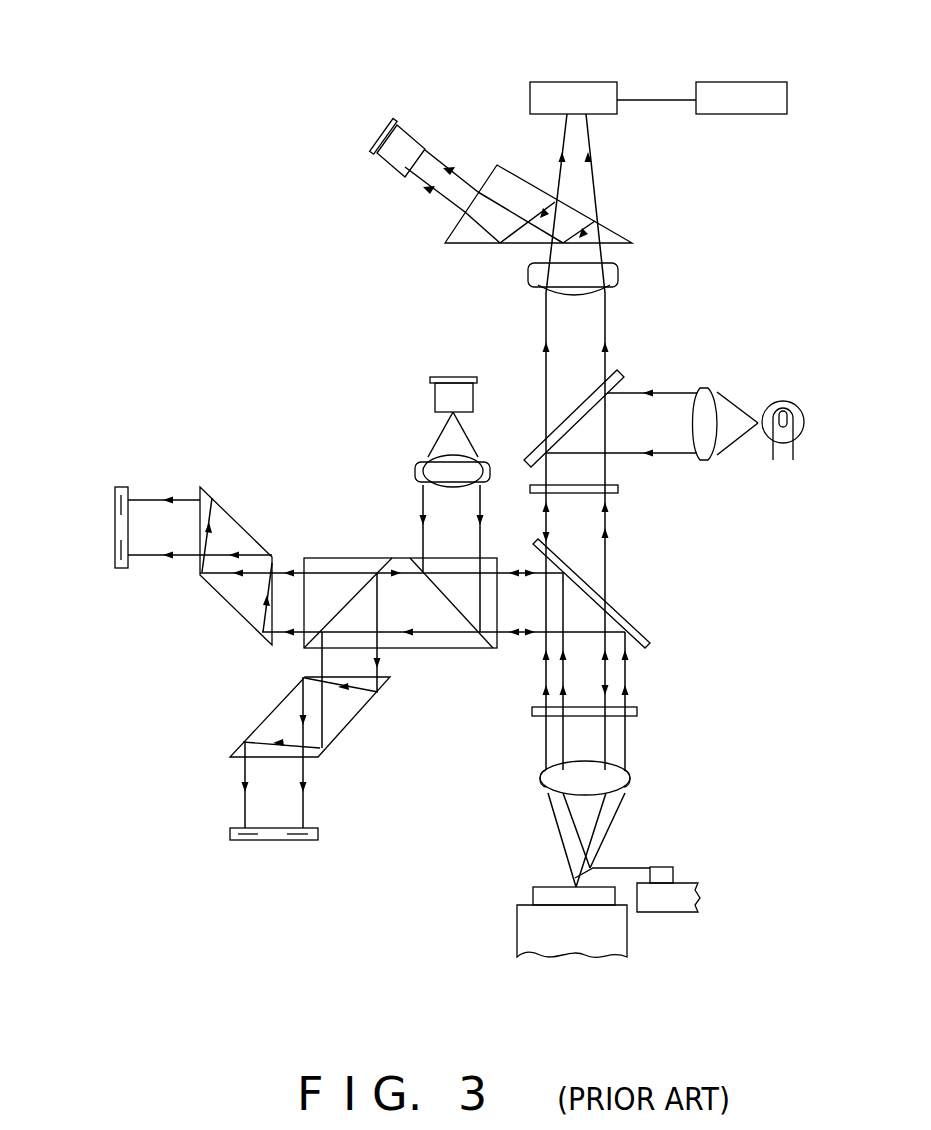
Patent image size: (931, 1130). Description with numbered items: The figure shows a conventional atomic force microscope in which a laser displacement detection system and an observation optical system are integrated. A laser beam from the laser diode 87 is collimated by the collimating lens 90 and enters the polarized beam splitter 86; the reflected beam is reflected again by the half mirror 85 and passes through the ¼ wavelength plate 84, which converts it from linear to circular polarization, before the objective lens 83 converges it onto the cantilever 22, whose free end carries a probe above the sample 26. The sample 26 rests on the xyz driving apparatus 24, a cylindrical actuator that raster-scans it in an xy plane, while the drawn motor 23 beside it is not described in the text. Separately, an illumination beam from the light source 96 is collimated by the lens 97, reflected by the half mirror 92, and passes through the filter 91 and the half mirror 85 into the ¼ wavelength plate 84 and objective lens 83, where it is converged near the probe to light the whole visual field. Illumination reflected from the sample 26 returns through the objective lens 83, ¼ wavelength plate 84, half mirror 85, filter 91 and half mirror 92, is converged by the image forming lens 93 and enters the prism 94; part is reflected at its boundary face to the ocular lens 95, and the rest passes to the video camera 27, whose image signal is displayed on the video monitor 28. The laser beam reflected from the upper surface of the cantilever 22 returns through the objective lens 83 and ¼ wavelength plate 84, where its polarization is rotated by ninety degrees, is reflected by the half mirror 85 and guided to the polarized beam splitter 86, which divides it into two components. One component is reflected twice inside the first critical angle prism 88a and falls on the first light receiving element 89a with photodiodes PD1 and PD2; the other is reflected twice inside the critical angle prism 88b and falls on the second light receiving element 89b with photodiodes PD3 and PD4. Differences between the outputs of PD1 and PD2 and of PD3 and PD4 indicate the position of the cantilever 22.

The cantilever 22 is at (617, 868).
The spindle motor 23 is at (673, 875).
The xyz driving apparatus 24 is at (517, 930).
The sample 26 is at (533, 893).
The video camera 27 is at (562, 82).
The video monitor 28 is at (737, 82).
The objective lens 83 is at (632, 778).
The ¼ wavelength plate 84 is at (637, 711).
The half mirror 85 is at (648, 640).
The polarized beam splitter 86 is at (462, 648).
The laser diode 87 is at (448, 377).
The first critical angle prism 88a is at (243, 523).
The critical angle prism 88b is at (350, 723).
The first light receiving element 89a is at (118, 487).
The second light receiving element 89b is at (318, 834).
The collimating lens 90 is at (415, 470).
The filter 91 is at (618, 489).
The half mirror 92 is at (622, 373).
The image forming lens 93 is at (618, 272).
The prism 94 is at (620, 234).
The ocular lens 95 is at (408, 130).
The light source 96 is at (783, 401).
The lens 97 is at (700, 388).
The photodiode PD1 is at (115, 510).
The photodiode PD2 is at (115, 553).
The photodiode PD3 is at (245, 840).
The photodiode PD4 is at (297, 840).